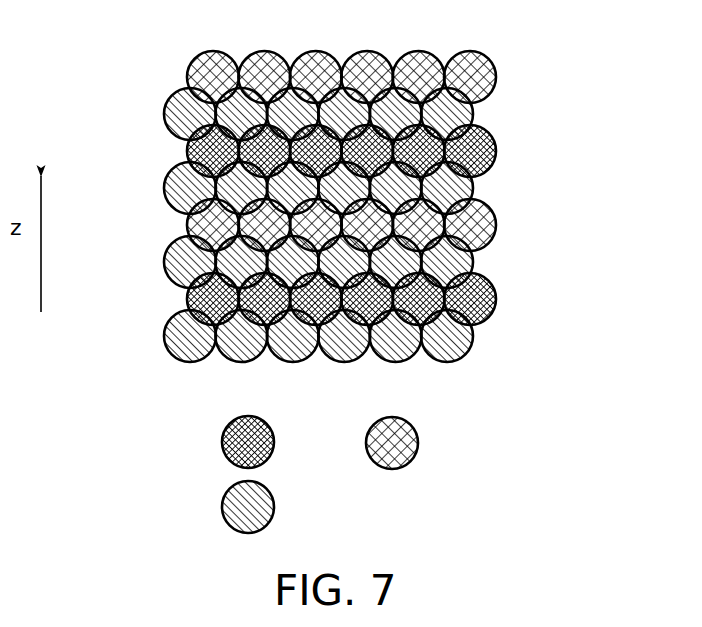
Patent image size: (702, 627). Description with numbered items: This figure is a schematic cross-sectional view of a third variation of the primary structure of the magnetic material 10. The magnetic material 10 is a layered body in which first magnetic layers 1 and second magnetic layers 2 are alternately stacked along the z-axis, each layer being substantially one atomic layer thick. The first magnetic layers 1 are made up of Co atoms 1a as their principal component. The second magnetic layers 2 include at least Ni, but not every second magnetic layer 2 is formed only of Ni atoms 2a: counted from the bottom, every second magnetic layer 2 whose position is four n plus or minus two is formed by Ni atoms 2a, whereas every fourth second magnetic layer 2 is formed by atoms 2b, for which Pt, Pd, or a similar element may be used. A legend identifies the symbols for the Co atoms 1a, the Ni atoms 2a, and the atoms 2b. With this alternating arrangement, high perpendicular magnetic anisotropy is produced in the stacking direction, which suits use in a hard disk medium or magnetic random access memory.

The magnetic material 10 is at (345, 203).
The first magnetic layer 1 is at (520, 121).
The second magnetic layer 2 is at (520, 82).
The Co atoms 1a is at (272, 507).
The Ni atoms 2a is at (272, 442).
The atoms 2b is at (417, 443).